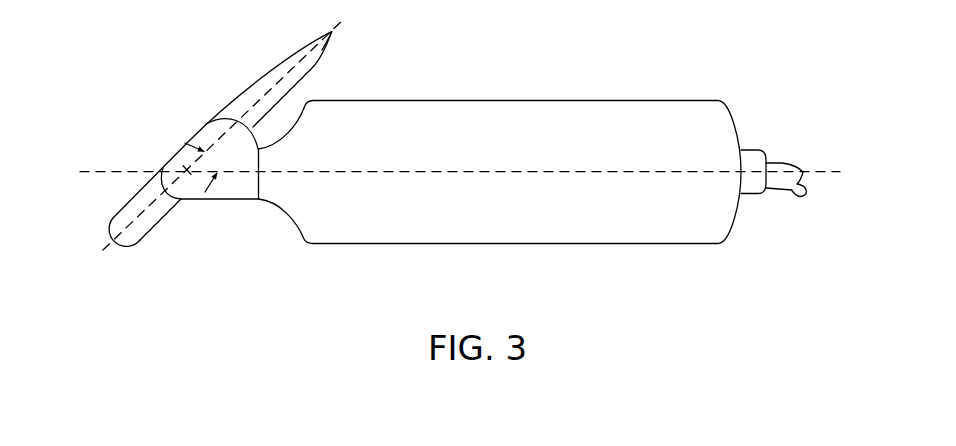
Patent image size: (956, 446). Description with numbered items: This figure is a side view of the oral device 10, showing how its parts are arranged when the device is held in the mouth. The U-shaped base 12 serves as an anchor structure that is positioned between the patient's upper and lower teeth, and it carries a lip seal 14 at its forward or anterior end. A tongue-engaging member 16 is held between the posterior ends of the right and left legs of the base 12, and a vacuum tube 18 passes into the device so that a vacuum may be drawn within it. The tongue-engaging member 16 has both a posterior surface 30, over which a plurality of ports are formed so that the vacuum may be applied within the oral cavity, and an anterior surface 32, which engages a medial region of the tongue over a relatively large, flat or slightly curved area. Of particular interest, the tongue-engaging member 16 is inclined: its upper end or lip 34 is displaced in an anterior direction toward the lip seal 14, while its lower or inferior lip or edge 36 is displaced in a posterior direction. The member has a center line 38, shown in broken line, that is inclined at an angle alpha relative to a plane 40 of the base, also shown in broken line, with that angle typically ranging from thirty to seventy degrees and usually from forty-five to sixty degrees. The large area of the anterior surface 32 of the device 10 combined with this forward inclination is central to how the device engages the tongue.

The oral device 10 is at (691, 47).
The U-shaped base 12 is at (495, 230).
The lip seal 14 is at (740, 212).
The tongue-engaging member 16 is at (210, 132).
The vacuum tube 18 is at (780, 162).
The posterior surface 30 is at (289, 55).
The anterior surface 32 is at (312, 68).
The upper lip 34 is at (330, 31).
The lower lip 36 is at (111, 229).
The center line 38 is at (280, 78).
The plane of the base 40 is at (539, 171).